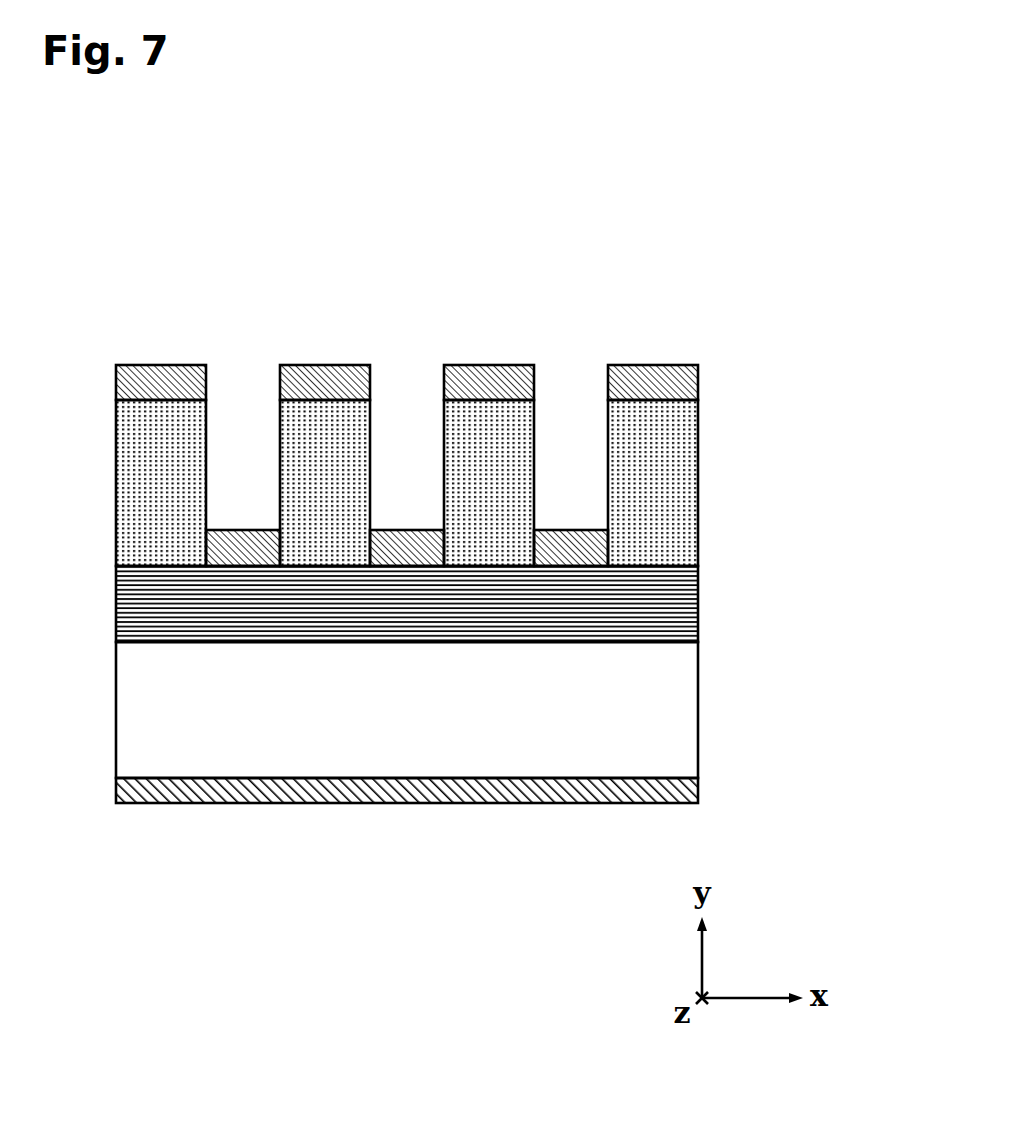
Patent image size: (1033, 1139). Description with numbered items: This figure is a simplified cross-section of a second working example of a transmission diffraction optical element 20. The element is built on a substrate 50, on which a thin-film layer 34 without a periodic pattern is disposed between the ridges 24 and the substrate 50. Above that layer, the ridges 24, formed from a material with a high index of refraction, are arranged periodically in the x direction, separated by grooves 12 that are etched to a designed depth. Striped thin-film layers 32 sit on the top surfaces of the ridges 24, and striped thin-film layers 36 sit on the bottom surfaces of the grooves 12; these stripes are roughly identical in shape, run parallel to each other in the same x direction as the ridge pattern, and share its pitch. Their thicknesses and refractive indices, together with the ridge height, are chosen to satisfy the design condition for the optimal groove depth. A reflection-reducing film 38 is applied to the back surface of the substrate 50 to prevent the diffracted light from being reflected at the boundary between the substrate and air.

The diffraction optical element 20 is at (414, 318).
The groove 12 is at (558, 398).
The striped thin-film layer 32 is at (660, 385).
The ridge 24 is at (653, 452).
The striped thin-film layer 36 is at (570, 552).
The thin-film layer 34 is at (657, 597).
The substrate 50 is at (332, 740).
The reflection-reducing film 38 is at (518, 802).